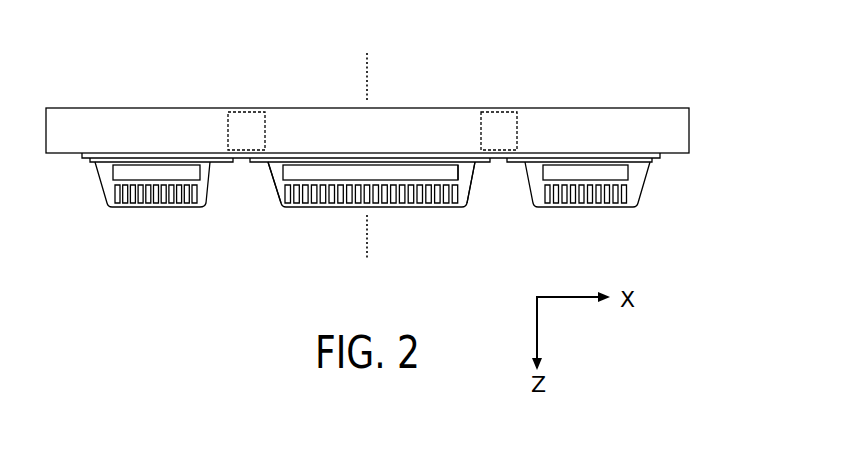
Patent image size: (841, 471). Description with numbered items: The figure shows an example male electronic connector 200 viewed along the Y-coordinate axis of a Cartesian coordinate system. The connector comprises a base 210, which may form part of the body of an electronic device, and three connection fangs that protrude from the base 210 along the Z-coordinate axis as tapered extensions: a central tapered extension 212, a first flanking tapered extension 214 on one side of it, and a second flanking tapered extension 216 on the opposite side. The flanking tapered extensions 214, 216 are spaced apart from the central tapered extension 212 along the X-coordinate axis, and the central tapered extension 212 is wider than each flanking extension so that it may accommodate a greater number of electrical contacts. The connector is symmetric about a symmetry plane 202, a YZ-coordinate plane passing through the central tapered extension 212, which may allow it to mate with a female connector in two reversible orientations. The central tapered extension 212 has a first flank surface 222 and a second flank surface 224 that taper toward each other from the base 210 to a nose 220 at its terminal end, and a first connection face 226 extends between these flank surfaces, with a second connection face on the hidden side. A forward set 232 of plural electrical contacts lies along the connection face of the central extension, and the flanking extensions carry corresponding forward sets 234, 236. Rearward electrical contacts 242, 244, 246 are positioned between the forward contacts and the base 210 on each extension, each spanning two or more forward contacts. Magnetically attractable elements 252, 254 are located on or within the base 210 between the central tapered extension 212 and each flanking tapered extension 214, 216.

The male electronic connector 200 is at (670, 68).
The symmetry plane 202 is at (368, 158).
The base 210 is at (212, 117).
The central tapered extension 212 is at (275, 182).
The first flanking tapered extension 214 is at (106, 182).
The second flanking tapered extension 216 is at (533, 182).
The nose 220 is at (358, 167).
The first flank surface 222 is at (272, 180).
The second flank surface 224 is at (468, 188).
The first connection face 226 is at (463, 177).
The forward set of plural electrical contacts 232 is at (277, 203).
The forward set of plural electrical contacts 234 is at (108, 203).
The forward set of plural electrical contacts 236 is at (535, 203).
The rearward electrical contact 242 is at (343, 172).
The rearward electrical contact 244 is at (150, 172).
The rearward electrical contact 246 is at (575, 172).
The magnetically attractable element 252 is at (258, 125).
The magnetically attractable element 254 is at (503, 122).